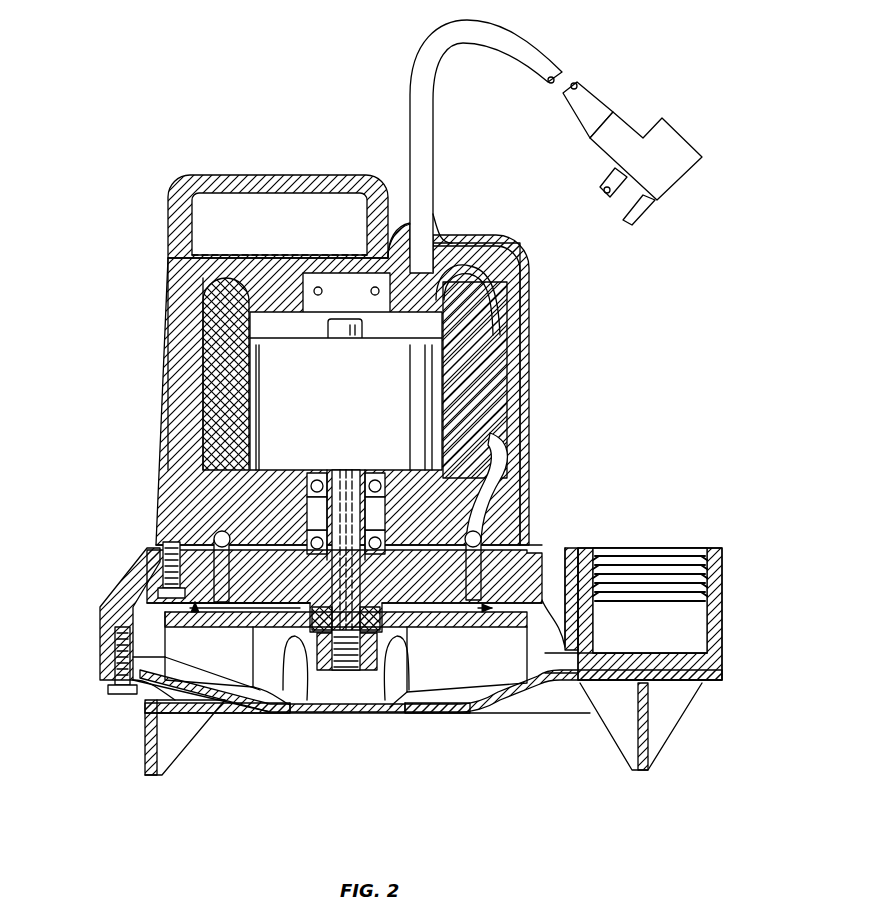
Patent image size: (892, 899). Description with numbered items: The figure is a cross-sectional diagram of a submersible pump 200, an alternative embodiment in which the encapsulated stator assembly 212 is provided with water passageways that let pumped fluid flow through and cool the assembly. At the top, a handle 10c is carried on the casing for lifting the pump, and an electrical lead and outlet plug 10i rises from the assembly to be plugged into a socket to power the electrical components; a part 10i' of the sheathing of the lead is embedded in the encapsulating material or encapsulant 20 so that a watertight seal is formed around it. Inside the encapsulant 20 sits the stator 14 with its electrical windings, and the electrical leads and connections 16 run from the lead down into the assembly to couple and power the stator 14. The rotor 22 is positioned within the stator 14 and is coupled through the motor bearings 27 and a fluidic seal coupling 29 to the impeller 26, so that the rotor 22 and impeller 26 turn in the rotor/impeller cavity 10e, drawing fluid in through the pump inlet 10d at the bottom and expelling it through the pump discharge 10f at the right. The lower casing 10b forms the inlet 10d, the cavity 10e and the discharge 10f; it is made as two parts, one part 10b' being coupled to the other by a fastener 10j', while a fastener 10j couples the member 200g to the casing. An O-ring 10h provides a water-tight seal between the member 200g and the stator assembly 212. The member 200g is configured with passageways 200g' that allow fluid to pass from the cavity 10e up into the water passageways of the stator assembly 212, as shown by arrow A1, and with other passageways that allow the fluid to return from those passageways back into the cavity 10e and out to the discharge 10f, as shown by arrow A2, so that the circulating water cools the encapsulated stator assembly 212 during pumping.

The submersible pump 200 is at (128, 128).
The handle 10c is at (212, 175).
The electrical lead and outlet plug 10i is at (557, 146).
The part of the sheathing of the electrical lead 10i' is at (412, 199).
The encapsulating material or encapsulant 20 is at (488, 243).
The electrical leads and connections 16 is at (500, 280).
The encapsulated stator assembly 212 is at (186, 325).
The stator 14 is at (478, 367).
The rotor 22 is at (354, 450).
The motor bearings 27 is at (380, 452).
The pump discharge 10f is at (672, 538).
The passageways 200g' is at (141, 531).
The lower casing 10b is at (390, 586).
The fastener 10j is at (120, 572).
The part of the lower casing 10b' is at (97, 624).
The fastener 10j' is at (87, 673).
The member 200g is at (237, 679).
The rotor/impeller cavity 10e is at (315, 692).
The pump inlet 10d is at (351, 717).
The fluidic seal coupling 29 is at (386, 637).
The impeller 26 is at (440, 688).
The O-ring 10h is at (457, 555).
The arrow A1 is at (200, 608).
The arrow A2 is at (485, 612).